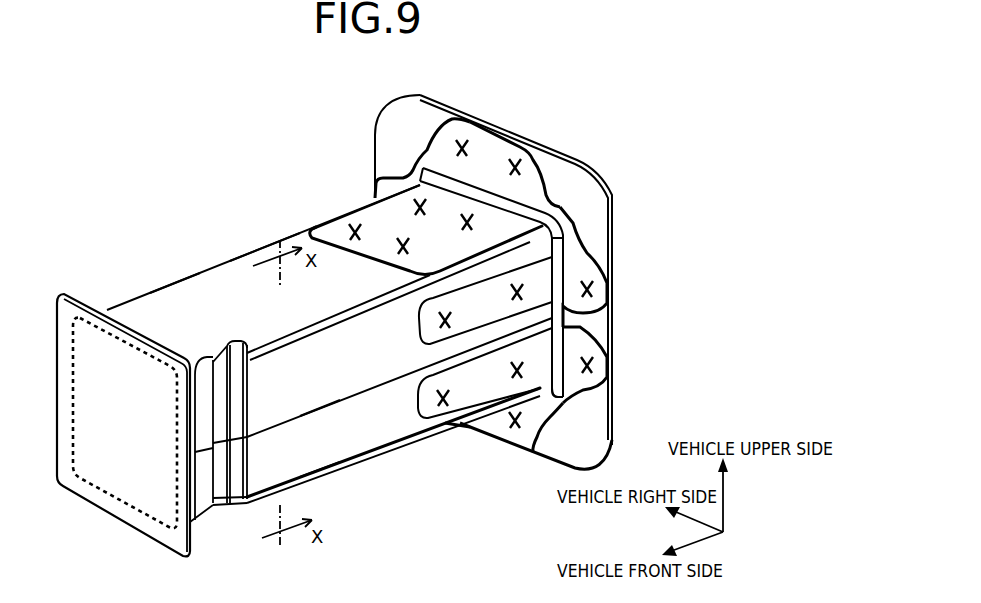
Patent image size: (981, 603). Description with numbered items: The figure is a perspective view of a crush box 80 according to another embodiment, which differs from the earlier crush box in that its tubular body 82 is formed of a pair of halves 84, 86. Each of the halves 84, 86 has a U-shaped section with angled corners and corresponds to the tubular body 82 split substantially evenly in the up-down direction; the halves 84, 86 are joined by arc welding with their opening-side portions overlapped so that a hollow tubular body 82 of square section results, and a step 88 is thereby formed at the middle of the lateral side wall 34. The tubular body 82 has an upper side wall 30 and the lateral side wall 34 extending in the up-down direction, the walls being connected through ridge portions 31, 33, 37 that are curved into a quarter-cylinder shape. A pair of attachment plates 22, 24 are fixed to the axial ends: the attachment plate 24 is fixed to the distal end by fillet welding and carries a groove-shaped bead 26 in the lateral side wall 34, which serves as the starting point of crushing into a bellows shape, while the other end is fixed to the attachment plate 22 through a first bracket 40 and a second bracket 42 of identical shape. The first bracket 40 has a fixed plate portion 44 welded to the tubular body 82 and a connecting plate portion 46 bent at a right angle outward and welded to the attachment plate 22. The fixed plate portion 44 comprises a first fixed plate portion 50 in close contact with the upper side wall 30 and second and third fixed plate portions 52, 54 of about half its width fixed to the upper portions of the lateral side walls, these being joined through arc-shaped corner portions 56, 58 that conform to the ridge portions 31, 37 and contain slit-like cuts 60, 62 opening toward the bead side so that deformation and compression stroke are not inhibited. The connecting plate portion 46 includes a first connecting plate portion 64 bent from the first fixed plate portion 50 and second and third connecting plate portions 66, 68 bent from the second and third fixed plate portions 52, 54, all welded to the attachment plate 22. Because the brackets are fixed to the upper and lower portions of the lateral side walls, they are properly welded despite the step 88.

The attachment plate 22 is at (430, 117).
The attachment plate 24 is at (116, 508).
The bead 26 is at (225, 472).
The upper side wall 30 is at (202, 292).
The ridge portion 31 is at (262, 343).
The ridge portion 33 is at (330, 465).
The lateral side wall 34 is at (322, 393).
The ridge portion 37 is at (147, 294).
The first bracket 40 is at (582, 193).
The second bracket 42 is at (540, 462).
The fixed plate portion 44 is at (318, 211).
The connecting plate portion 46 is at (392, 150).
The first fixed plate portion 50 is at (362, 215).
The second fixed plate portion 52 is at (492, 314).
The third fixed plate portion 54 is at (494, 391).
The corner portion 56 is at (565, 213).
The corner portion 58 is at (562, 405).
The cut 60 is at (540, 256).
The cut 62 is at (458, 425).
The first connecting plate portion 64 is at (495, 146).
The second connecting plate portion 66 is at (597, 292).
The third connecting plate portion 68 is at (597, 367).
The crush box 80 is at (170, 138).
The tubular body 82 is at (181, 218).
The half 84 is at (267, 230).
The half 86 is at (375, 470).
The step 88 is at (378, 405).